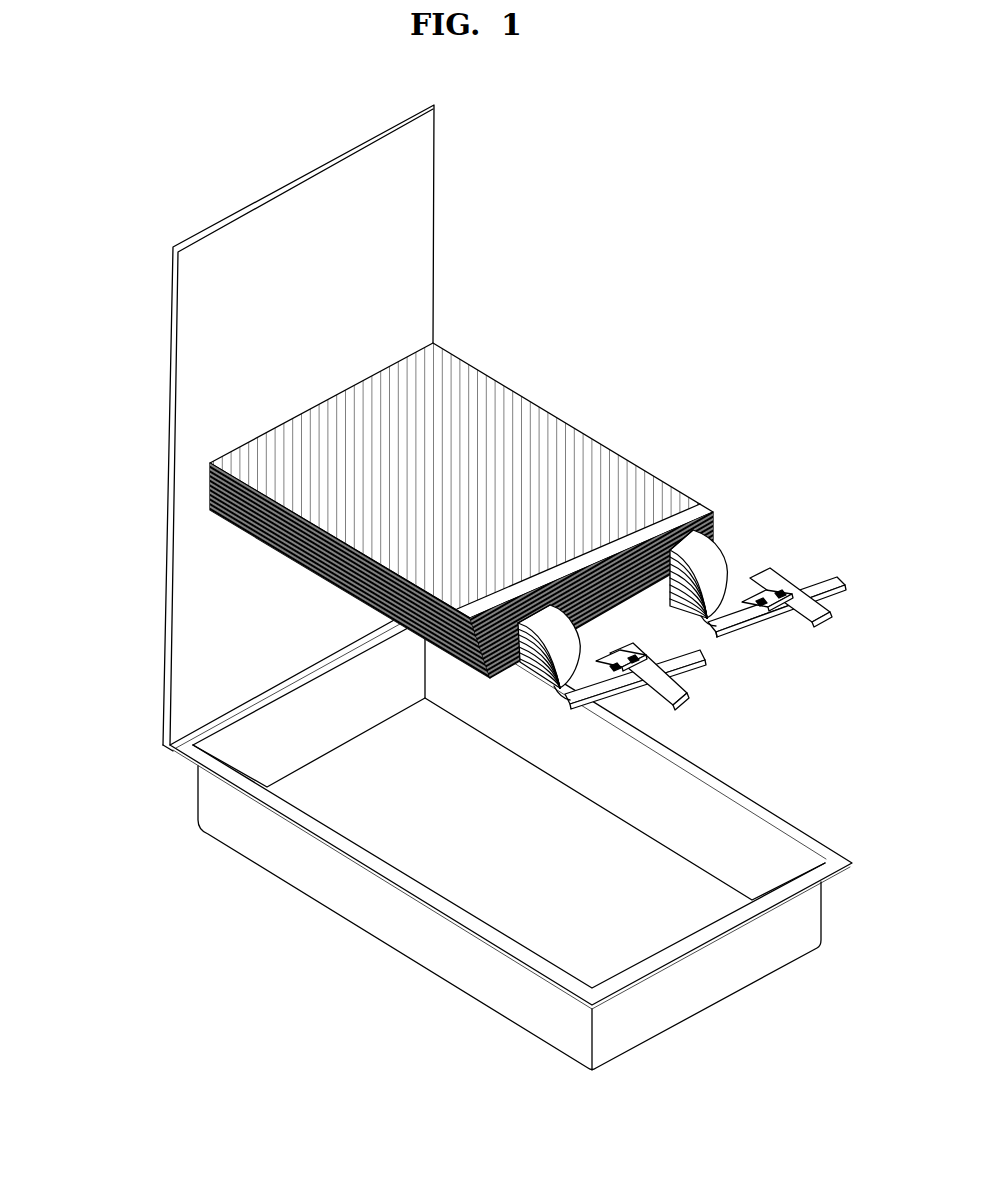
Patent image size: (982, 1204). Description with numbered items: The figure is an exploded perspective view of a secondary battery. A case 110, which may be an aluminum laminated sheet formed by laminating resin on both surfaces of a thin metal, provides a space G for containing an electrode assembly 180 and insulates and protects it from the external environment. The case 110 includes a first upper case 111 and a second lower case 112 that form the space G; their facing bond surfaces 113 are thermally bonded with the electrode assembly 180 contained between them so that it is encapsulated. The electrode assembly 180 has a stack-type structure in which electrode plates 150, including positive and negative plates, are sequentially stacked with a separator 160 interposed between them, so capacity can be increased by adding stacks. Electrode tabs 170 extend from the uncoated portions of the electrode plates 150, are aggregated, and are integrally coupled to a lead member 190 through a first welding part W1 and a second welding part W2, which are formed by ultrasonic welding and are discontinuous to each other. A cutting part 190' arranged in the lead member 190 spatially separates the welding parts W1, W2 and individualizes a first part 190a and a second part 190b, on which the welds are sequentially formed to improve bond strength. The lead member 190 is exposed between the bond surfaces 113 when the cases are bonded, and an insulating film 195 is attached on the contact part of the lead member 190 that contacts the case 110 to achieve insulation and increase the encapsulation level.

The case 110 is at (447, 587).
The first upper case 111 is at (433, 268).
The second lower case 112 is at (292, 873).
The bond surfaces 113 is at (478, 930).
The space G is at (460, 828).
The electrode plate 150 is at (417, 510).
The separator 160 is at (210, 463).
The electrode tabs 170 is at (568, 652).
The electrode assembly 180 is at (676, 569).
The lead member 190 is at (731, 655).
The cutting part 190' is at (705, 643).
The first part 190a is at (558, 670).
The second part 190b is at (636, 656).
The insulating film 195 is at (773, 630).
The first welding part W1 is at (747, 552).
The second welding part W2 is at (638, 663).